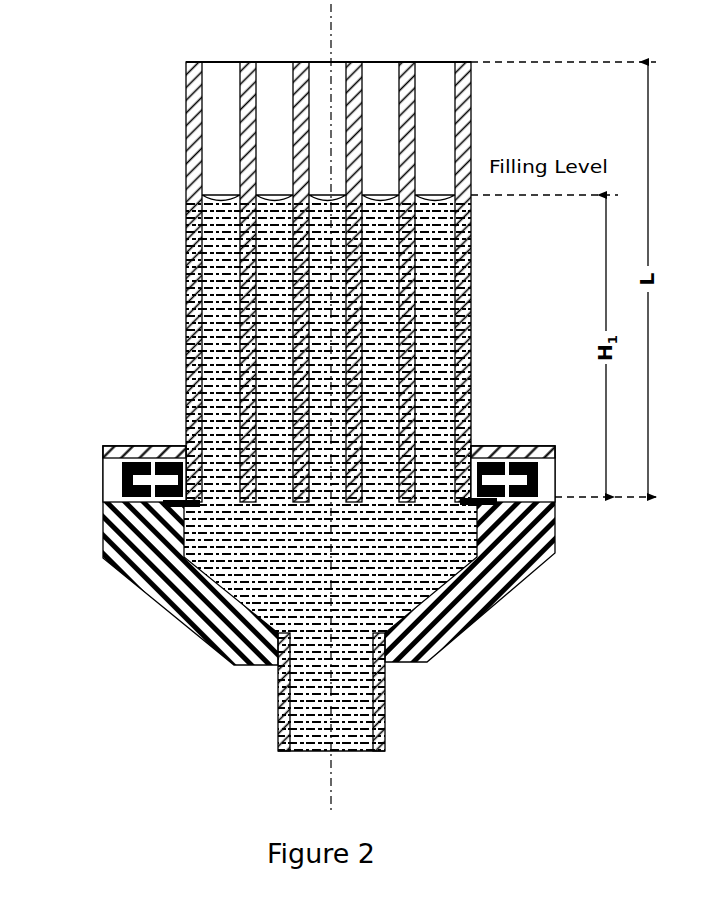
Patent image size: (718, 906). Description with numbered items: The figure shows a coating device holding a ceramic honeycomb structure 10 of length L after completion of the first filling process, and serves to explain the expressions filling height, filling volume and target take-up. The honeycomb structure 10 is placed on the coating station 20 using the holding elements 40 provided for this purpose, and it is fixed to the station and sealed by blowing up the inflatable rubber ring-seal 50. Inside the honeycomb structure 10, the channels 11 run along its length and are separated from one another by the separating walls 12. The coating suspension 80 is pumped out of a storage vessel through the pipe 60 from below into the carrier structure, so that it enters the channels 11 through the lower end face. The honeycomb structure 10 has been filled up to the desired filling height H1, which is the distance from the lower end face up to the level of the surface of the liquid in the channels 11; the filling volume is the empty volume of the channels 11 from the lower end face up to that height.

The honeycomb structure 10 is at (185, 95).
The channels 11 is at (275, 127).
The separating walls 12 is at (249, 222).
The coating station 20 is at (462, 637).
The holding elements 40 is at (490, 505).
The inflatable rubber ring-seal 50 is at (537, 472).
The pipe 60 is at (385, 716).
The coating suspension 80 is at (397, 567).